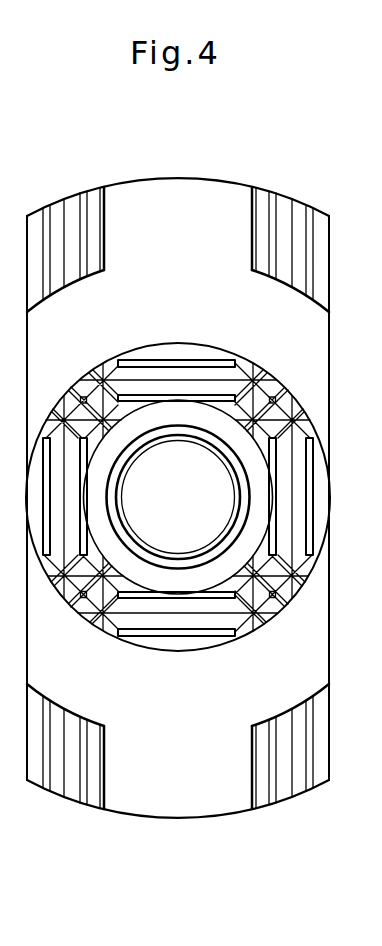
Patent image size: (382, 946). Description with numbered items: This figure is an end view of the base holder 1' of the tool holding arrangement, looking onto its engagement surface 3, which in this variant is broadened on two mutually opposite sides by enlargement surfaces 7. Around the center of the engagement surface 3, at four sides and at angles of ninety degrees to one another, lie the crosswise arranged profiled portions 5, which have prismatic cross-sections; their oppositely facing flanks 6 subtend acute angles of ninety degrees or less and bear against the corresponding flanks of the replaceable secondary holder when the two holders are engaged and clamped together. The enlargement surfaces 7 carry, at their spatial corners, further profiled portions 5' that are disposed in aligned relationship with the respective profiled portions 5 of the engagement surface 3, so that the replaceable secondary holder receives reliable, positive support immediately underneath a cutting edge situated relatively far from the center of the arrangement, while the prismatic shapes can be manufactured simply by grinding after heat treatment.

The base holder 1' is at (182, 156).
The engagement surface 3 is at (320, 585).
The profiled portions 5 is at (142, 430).
The further profiled portions 5' is at (178, 501).
The flanks 6 is at (298, 471).
The enlargement surface 7 is at (157, 188).